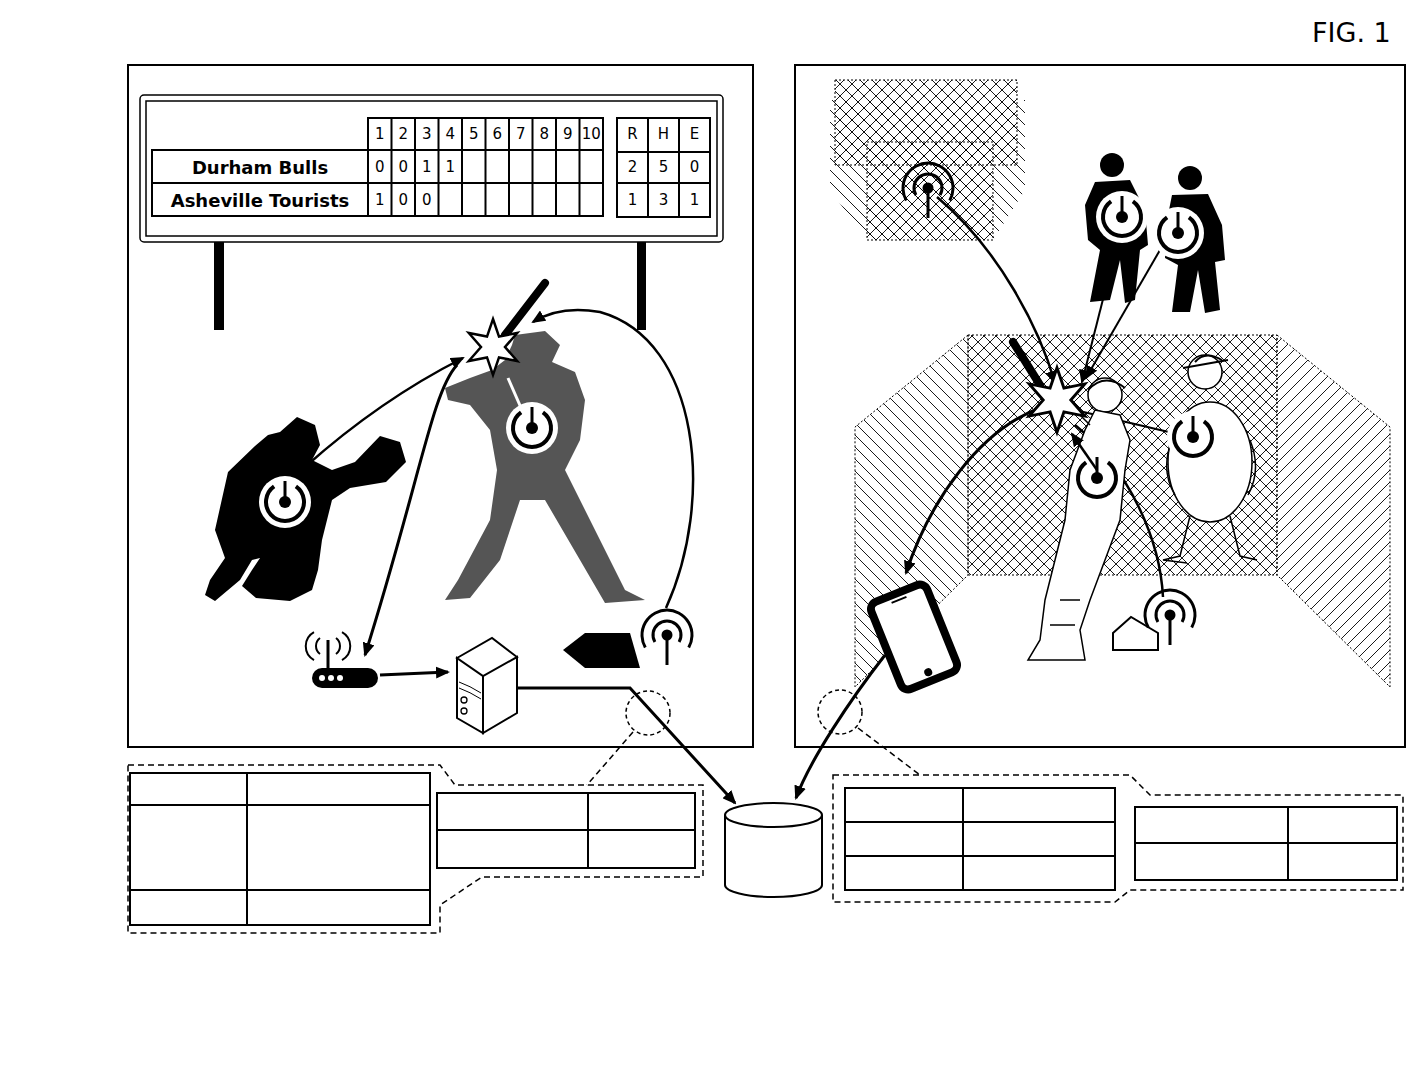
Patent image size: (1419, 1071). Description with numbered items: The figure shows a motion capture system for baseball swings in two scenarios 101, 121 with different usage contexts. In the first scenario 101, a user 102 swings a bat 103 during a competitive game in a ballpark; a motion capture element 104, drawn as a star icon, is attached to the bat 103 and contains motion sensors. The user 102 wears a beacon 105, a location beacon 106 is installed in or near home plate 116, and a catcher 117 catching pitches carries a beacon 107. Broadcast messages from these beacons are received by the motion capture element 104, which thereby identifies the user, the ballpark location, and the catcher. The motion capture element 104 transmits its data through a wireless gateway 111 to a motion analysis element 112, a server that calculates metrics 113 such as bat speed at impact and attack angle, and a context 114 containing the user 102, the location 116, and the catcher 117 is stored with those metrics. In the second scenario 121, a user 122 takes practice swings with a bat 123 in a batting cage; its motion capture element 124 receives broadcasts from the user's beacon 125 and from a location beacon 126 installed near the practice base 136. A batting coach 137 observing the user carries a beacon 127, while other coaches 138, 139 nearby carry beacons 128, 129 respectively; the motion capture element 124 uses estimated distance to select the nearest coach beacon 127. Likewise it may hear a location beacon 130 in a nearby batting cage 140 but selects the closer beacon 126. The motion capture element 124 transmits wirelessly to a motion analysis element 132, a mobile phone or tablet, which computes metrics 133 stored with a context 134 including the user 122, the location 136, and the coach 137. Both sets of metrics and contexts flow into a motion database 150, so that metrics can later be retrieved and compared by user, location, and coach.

The scenario 101 is at (485, 63).
The user 102 is at (583, 470).
The bat 103 is at (527, 300).
The motion capture element 104 is at (482, 342).
The beacon 105 is at (506, 433).
The beacon 106 is at (690, 622).
The beacon 107 is at (314, 507).
The wireless gateway 111 is at (313, 680).
The motion analysis element 112 is at (476, 660).
The metrics 113 is at (607, 868).
The context 114 is at (440, 905).
The home plate 116 is at (578, 640).
The catcher 117 is at (252, 470).
The scenario 121 is at (1112, 63).
The user 122 is at (1040, 585).
The bat 123 is at (1038, 378).
The motion capture element 124 is at (1040, 410).
The beacon 125 is at (1098, 506).
The beacon 126 is at (1195, 612).
The beacon 127 is at (1222, 368).
The beacon 128 is at (1213, 250).
The beacon 129 is at (1148, 200).
The location beacon 130 is at (912, 196).
The motion analysis element 132 is at (933, 682).
The metrics 133 is at (1248, 880).
The context 134 is at (1125, 890).
The practice base 136 is at (1133, 652).
The batting coach 137 is at (1216, 432).
The coach 138 is at (1217, 212).
The coach 139 is at (1092, 202).
The batting cage 140 is at (947, 222).
The motion database 150 is at (752, 885).